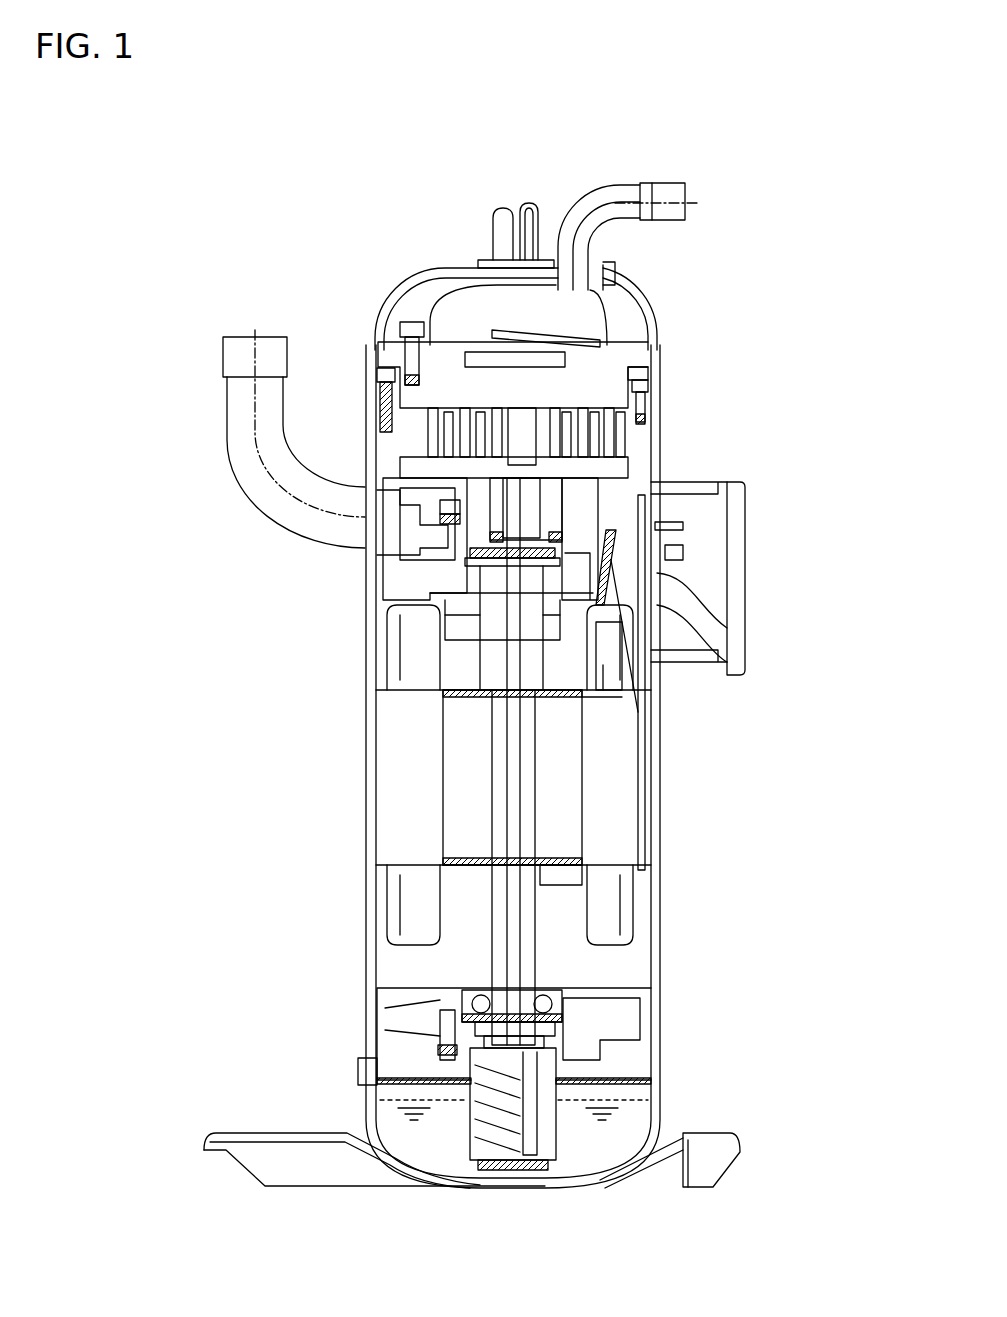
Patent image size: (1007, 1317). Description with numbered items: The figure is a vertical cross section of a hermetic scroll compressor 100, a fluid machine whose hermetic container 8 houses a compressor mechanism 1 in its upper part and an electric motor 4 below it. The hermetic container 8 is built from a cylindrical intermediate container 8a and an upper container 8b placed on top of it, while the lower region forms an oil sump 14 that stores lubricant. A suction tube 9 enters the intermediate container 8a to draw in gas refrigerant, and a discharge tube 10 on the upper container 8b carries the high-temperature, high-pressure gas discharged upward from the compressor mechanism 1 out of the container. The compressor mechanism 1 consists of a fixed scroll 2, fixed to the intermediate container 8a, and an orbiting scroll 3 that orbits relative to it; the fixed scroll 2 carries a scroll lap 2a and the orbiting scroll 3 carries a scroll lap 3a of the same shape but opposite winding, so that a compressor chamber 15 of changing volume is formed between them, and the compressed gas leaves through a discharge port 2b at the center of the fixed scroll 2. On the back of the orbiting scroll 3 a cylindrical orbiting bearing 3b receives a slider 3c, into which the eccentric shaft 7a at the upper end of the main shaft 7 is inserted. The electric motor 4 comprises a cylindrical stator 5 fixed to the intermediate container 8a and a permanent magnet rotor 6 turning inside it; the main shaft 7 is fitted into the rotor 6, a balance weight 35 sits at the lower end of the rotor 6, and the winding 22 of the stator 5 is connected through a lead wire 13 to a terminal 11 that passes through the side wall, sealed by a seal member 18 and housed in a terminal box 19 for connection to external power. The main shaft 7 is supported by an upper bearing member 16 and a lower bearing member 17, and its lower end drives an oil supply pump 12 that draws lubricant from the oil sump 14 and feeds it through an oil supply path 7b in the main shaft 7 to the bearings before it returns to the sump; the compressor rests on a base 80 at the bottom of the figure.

The hermetic scroll compressor 100 is at (359, 282).
The compressor mechanism 1 is at (745, 330).
The fixed scroll 2 is at (648, 352).
The scroll lap 2a is at (640, 398).
The discharge port 2b is at (515, 400).
The orbiting scroll 3 is at (604, 447).
The scroll lap 3a is at (618, 420).
The orbiting bearing 3b is at (448, 512).
The slider 3c is at (632, 507).
The electric motor 4 is at (745, 757).
The stator 5 is at (600, 750).
The rotor 6 is at (563, 792).
The main shaft 7 is at (492, 770).
The eccentric shaft 7a is at (537, 512).
The oil supply path 7b is at (505, 880).
The hermetic container 8 is at (372, 632).
The intermediate container 8a is at (362, 703).
The upper container 8b is at (372, 318).
The suction tube 9 is at (270, 507).
The discharge tube 10 is at (627, 217).
The terminal 11 is at (660, 568).
The oil supply pump 12 is at (358, 1069).
The lead wire 13 is at (600, 640).
The oil sump 14 is at (610, 1100).
The compressor chamber 15 is at (458, 432).
The upper bearing member 16 is at (480, 568).
The lower bearing member 17 is at (590, 1000).
The seal member 18 is at (660, 612).
The terminal box 19 is at (745, 543).
The winding 22 is at (624, 668).
The balance weight 35 is at (572, 883).
The base 80 is at (368, 1104).